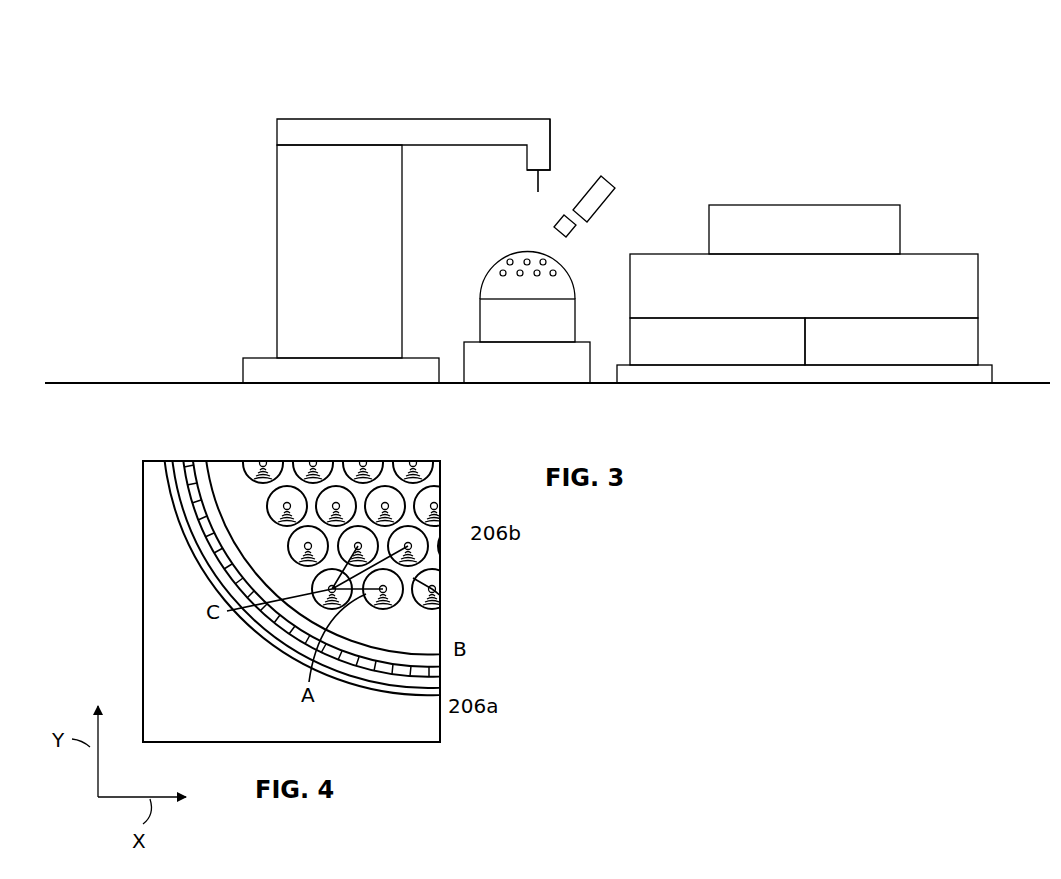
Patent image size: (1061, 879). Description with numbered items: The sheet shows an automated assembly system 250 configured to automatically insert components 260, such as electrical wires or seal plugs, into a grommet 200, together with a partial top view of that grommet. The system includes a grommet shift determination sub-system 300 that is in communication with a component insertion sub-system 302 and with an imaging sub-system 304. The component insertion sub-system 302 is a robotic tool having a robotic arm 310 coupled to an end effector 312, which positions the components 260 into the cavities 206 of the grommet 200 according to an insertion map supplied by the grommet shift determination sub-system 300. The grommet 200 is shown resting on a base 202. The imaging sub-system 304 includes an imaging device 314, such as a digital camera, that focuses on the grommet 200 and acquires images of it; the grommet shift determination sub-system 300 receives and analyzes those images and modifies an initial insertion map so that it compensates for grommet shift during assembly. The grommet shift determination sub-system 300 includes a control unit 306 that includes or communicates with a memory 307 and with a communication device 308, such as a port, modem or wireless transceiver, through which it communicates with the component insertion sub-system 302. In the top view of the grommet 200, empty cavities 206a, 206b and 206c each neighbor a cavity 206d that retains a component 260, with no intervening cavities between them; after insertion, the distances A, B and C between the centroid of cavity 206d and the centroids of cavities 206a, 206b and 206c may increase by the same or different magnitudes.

In FIG. 3, the automated assembly system 250 is at (240, 68).
In FIG. 3, the component insertion sub-system 302 is at (404, 225).
In FIG. 3, the robotic arm 310 is at (443, 119).
In FIG. 3, the end effector 312 is at (552, 129).
In FIG. 3, the component 260 is at (537, 186).
In FIG. 3, the imaging sub-system 304 is at (602, 184).
In FIG. 3, the imaging device 314 is at (590, 233).
In FIG. 3, the cavities 206 is at (528, 255).
In FIG. 3, the grommet 200 is at (518, 294).
In FIG. 3, the base 202 is at (463, 349).
In FIG. 3, the communication device 308 is at (797, 205).
In FIG. 3, the grommet shift determination sub-system 300 is at (806, 289).
In FIG. 3, the control unit 306 is at (630, 352).
In FIG. 3, the memory 307 is at (978, 332).
In FIG. 4, the cavity 206a is at (398, 608).
In FIG. 4, the cavity 206b is at (428, 541).
In FIG. 4, the cavity 206c is at (362, 526).
In FIG. 4, the cavity 206d is at (326, 558).